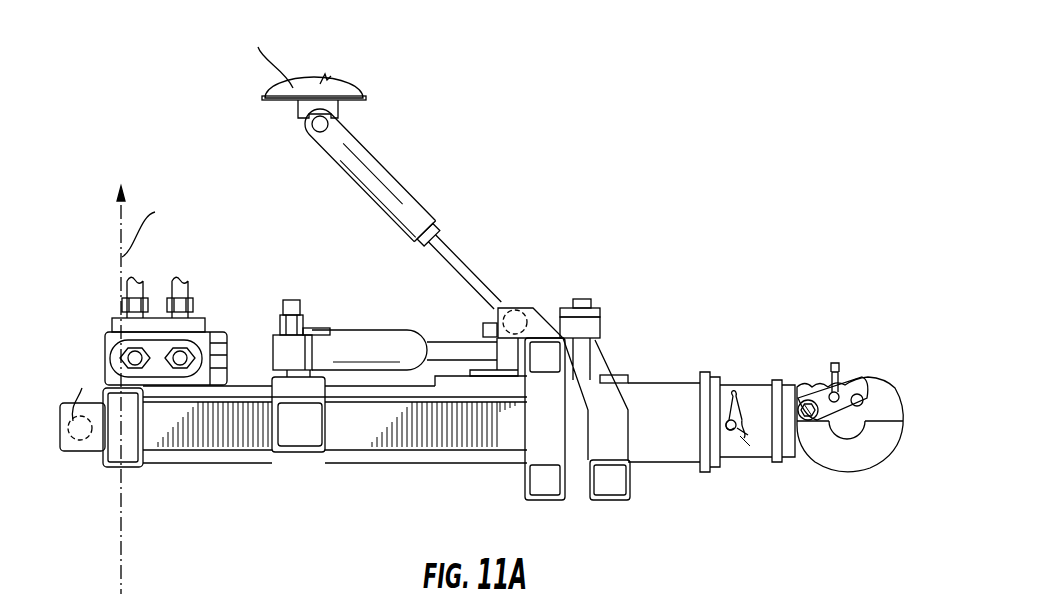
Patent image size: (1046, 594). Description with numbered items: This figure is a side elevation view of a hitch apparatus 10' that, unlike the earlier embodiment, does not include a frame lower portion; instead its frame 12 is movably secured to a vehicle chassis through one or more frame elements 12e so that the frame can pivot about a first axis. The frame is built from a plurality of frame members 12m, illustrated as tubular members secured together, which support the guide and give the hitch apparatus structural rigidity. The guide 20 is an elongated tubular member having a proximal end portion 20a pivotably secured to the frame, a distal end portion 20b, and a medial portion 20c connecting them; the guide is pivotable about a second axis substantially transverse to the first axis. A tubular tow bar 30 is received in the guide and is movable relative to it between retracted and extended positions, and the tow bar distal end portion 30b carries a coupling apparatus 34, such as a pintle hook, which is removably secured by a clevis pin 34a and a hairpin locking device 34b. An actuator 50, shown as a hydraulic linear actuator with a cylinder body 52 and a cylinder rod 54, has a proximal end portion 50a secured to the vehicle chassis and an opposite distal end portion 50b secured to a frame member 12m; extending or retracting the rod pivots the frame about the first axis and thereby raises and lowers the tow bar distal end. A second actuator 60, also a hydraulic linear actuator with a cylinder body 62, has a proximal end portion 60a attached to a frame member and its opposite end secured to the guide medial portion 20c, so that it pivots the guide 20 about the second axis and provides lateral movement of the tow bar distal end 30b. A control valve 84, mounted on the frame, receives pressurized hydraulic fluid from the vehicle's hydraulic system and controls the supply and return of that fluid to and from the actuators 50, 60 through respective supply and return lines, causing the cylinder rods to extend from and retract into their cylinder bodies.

The hitch apparatus 10' is at (477, 304).
The frame 12 is at (414, 452).
The frame element 12e is at (82, 453).
The frame member 12m is at (530, 308).
The guide 20 is at (668, 453).
The guide proximal end portion 20a is at (153, 427).
The guide distal end portion 20b is at (653, 382).
The guide medial portion 20c is at (352, 432).
The tow bar 30 is at (748, 450).
The tow bar distal end portion 30b is at (762, 383).
The coupling apparatus 34 is at (878, 378).
The clevis pin 34a is at (732, 428).
The hairpin locking device 34b is at (733, 395).
The actuator 50 is at (381, 185).
The actuator proximal end portion 50a is at (340, 132).
The actuator distal end portion 50b is at (498, 305).
The cylinder body 52 is at (415, 208).
The cylinder rod 54 is at (463, 263).
The actuator 60 is at (299, 298).
The actuator proximal end portion 60a is at (285, 345).
The cylinder body 62 is at (352, 335).
The control valve 84 is at (198, 326).